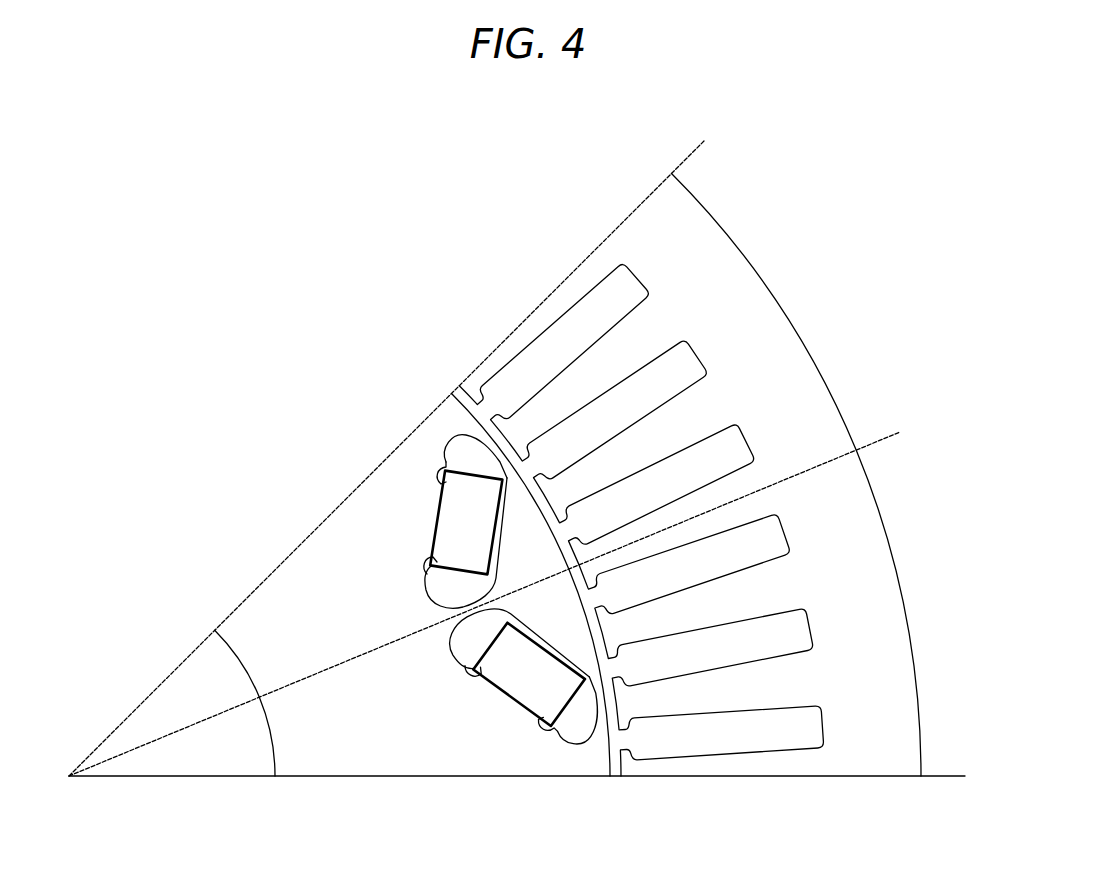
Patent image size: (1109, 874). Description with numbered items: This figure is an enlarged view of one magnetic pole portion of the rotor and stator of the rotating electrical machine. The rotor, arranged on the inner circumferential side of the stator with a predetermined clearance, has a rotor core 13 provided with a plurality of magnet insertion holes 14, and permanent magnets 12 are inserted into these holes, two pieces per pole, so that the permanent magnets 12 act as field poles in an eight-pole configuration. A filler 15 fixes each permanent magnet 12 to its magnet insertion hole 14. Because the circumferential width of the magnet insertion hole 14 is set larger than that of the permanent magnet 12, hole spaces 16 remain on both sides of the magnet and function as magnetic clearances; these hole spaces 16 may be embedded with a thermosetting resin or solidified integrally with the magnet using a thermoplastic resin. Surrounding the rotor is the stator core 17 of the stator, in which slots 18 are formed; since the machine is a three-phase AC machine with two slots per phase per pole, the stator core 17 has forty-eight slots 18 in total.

The permanent magnet 12 is at (528, 668).
The rotor core 13 is at (273, 605).
The magnet insertion hole 14 is at (452, 462).
The filler 15 is at (470, 448).
The hole space 16 is at (457, 590).
The stator core 17 is at (862, 598).
The slot 18 is at (733, 740).